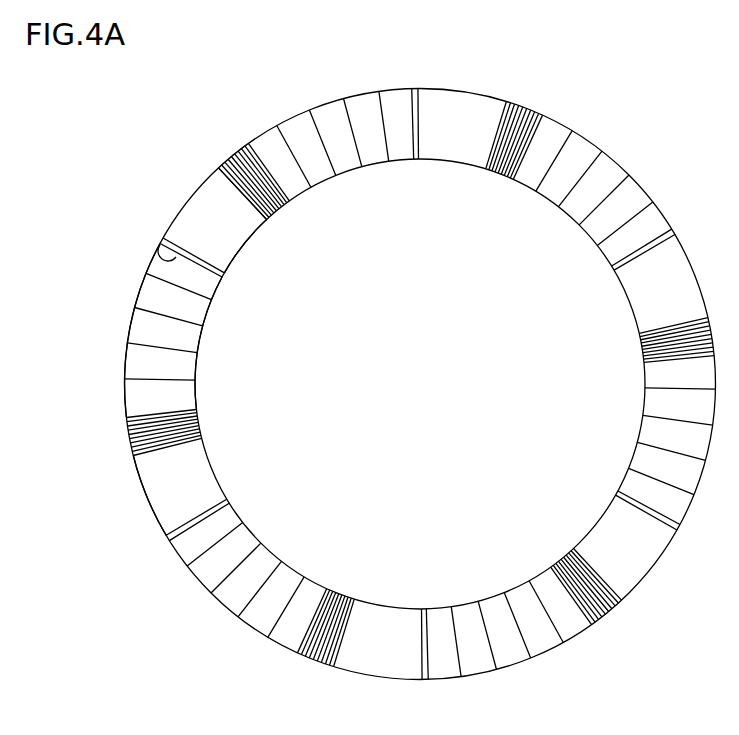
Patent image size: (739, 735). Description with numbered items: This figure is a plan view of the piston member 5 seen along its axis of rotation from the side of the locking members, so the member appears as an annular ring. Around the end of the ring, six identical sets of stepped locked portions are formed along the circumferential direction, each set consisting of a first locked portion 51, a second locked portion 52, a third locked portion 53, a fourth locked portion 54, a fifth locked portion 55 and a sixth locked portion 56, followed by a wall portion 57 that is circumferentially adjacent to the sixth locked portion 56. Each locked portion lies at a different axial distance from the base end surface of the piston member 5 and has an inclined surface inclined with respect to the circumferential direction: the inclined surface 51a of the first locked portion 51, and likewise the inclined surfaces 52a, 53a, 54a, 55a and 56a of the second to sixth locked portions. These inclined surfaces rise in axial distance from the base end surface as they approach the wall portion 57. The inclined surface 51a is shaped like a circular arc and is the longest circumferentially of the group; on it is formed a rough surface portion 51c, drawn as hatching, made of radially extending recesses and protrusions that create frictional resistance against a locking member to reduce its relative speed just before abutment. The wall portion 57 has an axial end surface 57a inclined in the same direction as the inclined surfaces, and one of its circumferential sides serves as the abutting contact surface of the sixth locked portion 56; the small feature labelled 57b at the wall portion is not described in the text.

The piston member 5 is at (208, 99).
The first locked portion 51 is at (190, 450).
The inclined surface 51a is at (158, 466).
The rough surface portion 51c is at (110, 447).
The second locked portion 52 is at (189, 397).
The inclined surface 52a is at (147, 397).
The third locked portion 53 is at (189, 371).
The inclined surface 53a is at (150, 361).
The fourth locked portion 54 is at (189, 340).
The inclined surface 54a is at (152, 327).
The fifth locked portion 55 is at (199, 314).
The inclined surface 55a is at (157, 301).
The sixth locked portion 56 is at (204, 283).
The inclined surface 56a is at (163, 275).
The wall portion 57 is at (242, 268).
The axial end surface 57a is at (181, 252).
The seventh segment hook 57b is at (162, 256).